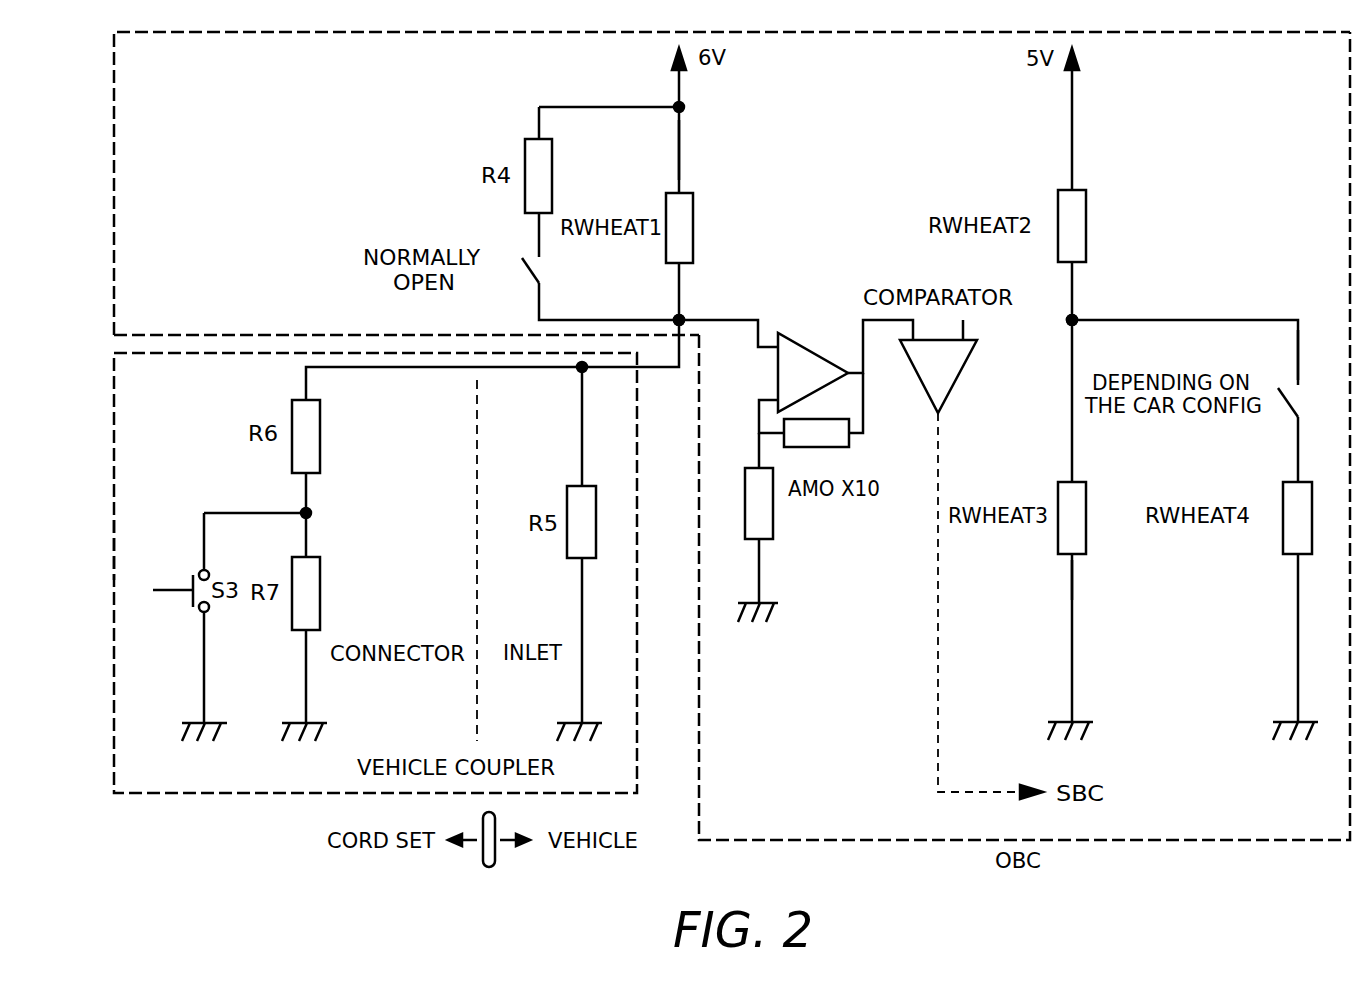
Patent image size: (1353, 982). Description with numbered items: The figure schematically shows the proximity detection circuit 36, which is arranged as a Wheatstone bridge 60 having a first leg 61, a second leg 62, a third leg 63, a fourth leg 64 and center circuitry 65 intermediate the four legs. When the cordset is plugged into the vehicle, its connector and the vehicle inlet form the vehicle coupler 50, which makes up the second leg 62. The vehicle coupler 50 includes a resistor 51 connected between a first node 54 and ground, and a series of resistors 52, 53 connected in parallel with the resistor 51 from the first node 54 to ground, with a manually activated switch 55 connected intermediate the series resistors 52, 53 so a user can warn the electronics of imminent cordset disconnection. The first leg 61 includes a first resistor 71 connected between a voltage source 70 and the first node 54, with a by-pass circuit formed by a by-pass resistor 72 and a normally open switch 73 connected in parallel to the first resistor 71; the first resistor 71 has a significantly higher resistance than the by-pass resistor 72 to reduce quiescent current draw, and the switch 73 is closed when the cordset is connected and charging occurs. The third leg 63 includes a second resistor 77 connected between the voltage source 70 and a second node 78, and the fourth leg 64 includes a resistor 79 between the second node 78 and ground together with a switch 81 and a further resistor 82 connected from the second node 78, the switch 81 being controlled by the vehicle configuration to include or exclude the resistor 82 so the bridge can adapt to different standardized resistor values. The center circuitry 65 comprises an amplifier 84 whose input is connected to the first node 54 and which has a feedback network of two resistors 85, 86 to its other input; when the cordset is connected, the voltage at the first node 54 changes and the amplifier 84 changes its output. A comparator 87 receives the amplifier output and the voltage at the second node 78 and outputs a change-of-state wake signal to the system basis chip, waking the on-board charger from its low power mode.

The proximity detection circuit 36 is at (100, 150).
The vehicle coupler 50 is at (114, 550).
The resistor 51 is at (575, 486).
The resistor 52 is at (320, 445).
The resistor 53 is at (320, 593).
The first node 54 is at (685, 316).
The switch 55 is at (198, 570).
The Wheatstone bridge 60 is at (937, 95).
The first leg 61 is at (712, 145).
The second leg 62 is at (100, 415).
The third leg 63 is at (1218, 148).
The fourth leg 64 is at (1288, 290).
The center circuitry 65 is at (888, 200).
The voltage source 70 is at (672, 62).
The first resistor 71 is at (693, 228).
The by-pass resistor 72 is at (528, 139).
The switch 73 is at (528, 277).
The second resistor 77 is at (1086, 225).
The second node 78 is at (1077, 316).
The resistor 79 is at (1086, 493).
The switch 81 is at (1290, 400).
The further resistor 82 is at (1283, 545).
The amplifier 84 is at (798, 335).
The feedback resistor 85 is at (849, 433).
The feedback resistor 86 is at (773, 525).
The comparator 87 is at (957, 385).